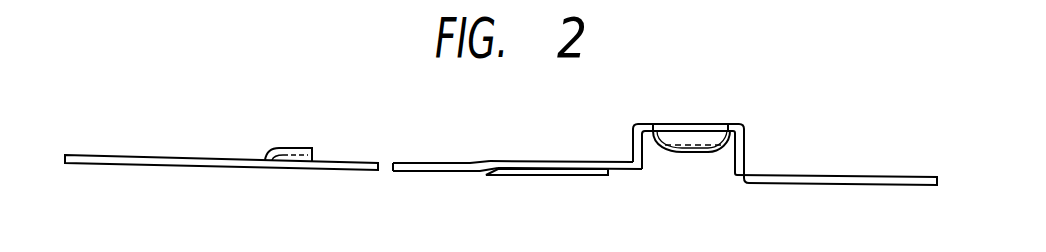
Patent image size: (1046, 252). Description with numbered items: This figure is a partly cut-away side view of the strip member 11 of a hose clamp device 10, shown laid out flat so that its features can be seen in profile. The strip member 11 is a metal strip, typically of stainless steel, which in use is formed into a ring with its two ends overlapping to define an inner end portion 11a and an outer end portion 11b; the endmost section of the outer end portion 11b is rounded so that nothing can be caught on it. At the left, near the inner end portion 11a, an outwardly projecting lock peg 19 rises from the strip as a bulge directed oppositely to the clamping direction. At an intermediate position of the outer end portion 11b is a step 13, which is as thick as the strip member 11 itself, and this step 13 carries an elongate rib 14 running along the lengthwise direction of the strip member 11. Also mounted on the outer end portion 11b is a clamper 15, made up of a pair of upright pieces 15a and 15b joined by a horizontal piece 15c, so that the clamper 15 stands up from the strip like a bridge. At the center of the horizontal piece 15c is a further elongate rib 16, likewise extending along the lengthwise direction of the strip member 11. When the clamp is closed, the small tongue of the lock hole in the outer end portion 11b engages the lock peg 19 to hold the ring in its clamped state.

The hose clamp device 10 is at (455, 162).
The strip member 11 is at (452, 173).
The inner end portion 11a is at (217, 170).
The outer end portion 11b is at (835, 185).
The step 13 is at (537, 158).
The elongate rib 14 is at (502, 175).
The clamper 15 is at (690, 132).
The upright piece 15a is at (632, 150).
The upright piece 15b is at (745, 157).
The horizontal piece 15c is at (668, 124).
The elongate rib 16 is at (687, 152).
The lock peg 19 is at (306, 149).